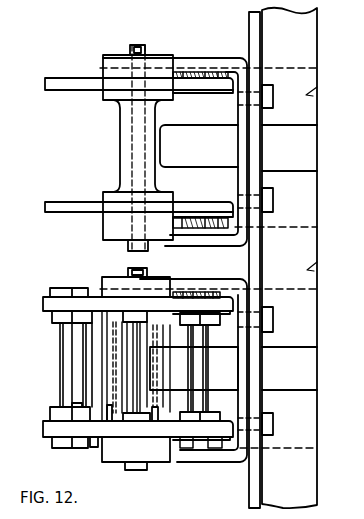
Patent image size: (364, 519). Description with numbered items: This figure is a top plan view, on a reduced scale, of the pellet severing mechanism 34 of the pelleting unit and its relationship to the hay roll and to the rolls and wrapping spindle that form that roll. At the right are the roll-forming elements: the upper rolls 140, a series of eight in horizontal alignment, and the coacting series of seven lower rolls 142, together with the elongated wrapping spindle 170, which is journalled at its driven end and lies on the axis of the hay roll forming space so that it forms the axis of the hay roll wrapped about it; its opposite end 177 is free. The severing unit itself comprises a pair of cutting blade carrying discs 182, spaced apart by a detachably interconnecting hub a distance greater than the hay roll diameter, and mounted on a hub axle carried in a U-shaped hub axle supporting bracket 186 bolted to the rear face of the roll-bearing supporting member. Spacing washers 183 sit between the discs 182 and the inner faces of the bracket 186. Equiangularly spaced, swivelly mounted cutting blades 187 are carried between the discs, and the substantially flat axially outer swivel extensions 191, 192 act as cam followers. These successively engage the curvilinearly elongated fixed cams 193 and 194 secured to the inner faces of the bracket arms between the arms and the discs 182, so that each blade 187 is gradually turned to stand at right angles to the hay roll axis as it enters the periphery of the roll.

The clamping assembly 34 is at (85, 274).
The upper rolls 140 is at (275, 260).
The lower rolls 142 is at (59, 200).
The wrapping spindle 170 is at (277, 258).
The free end of wrapping spindle 177 is at (166, 151).
The cutting blade carrying discs 182 is at (120, 147).
The spacing washers 183 is at (103, 70).
The U-shaped hub axle supporting bracket 186 is at (182, 58).
The cutting blades 187 is at (62, 349).
The swivel extension 191 is at (64, 448).
The swivel extension 192 is at (62, 289).
The fixed cam 193 is at (200, 72).
The fixed cam 194 is at (203, 227).